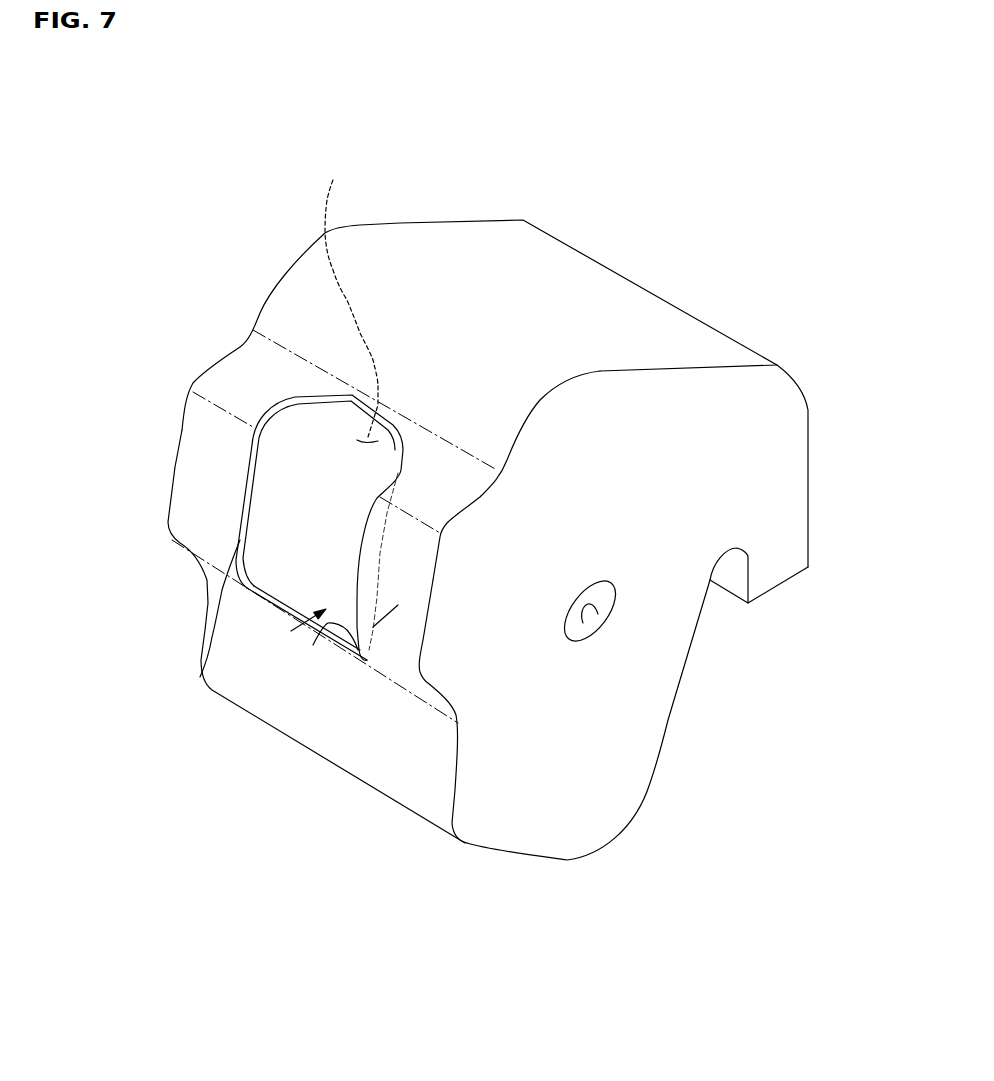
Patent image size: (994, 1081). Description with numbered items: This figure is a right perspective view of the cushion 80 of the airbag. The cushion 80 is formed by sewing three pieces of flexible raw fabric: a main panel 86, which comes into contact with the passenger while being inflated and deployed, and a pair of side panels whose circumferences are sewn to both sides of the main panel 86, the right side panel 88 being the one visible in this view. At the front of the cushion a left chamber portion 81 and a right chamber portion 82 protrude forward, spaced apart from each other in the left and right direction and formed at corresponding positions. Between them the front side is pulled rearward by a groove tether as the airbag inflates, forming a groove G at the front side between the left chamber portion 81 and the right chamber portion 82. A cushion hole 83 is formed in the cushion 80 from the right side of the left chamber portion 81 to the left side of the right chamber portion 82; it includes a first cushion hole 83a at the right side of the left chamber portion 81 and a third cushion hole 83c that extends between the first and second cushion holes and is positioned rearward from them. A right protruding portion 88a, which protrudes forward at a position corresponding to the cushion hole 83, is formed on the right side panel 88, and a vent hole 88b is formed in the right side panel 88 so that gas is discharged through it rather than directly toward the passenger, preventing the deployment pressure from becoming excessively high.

The cushion 80 is at (105, 203).
The left chamber portion 81 is at (218, 470).
The right chamber portion 82 is at (358, 662).
The cushion hole 83 is at (294, 632).
The first cushion hole 83a is at (200, 677).
The third cushion hole 83c is at (313, 645).
The main panel 86 is at (602, 307).
The right side panel 88 is at (627, 727).
The right protruding portion 88a is at (453, 632).
The vent hole 88b is at (598, 614).
The groove G is at (351, 299).